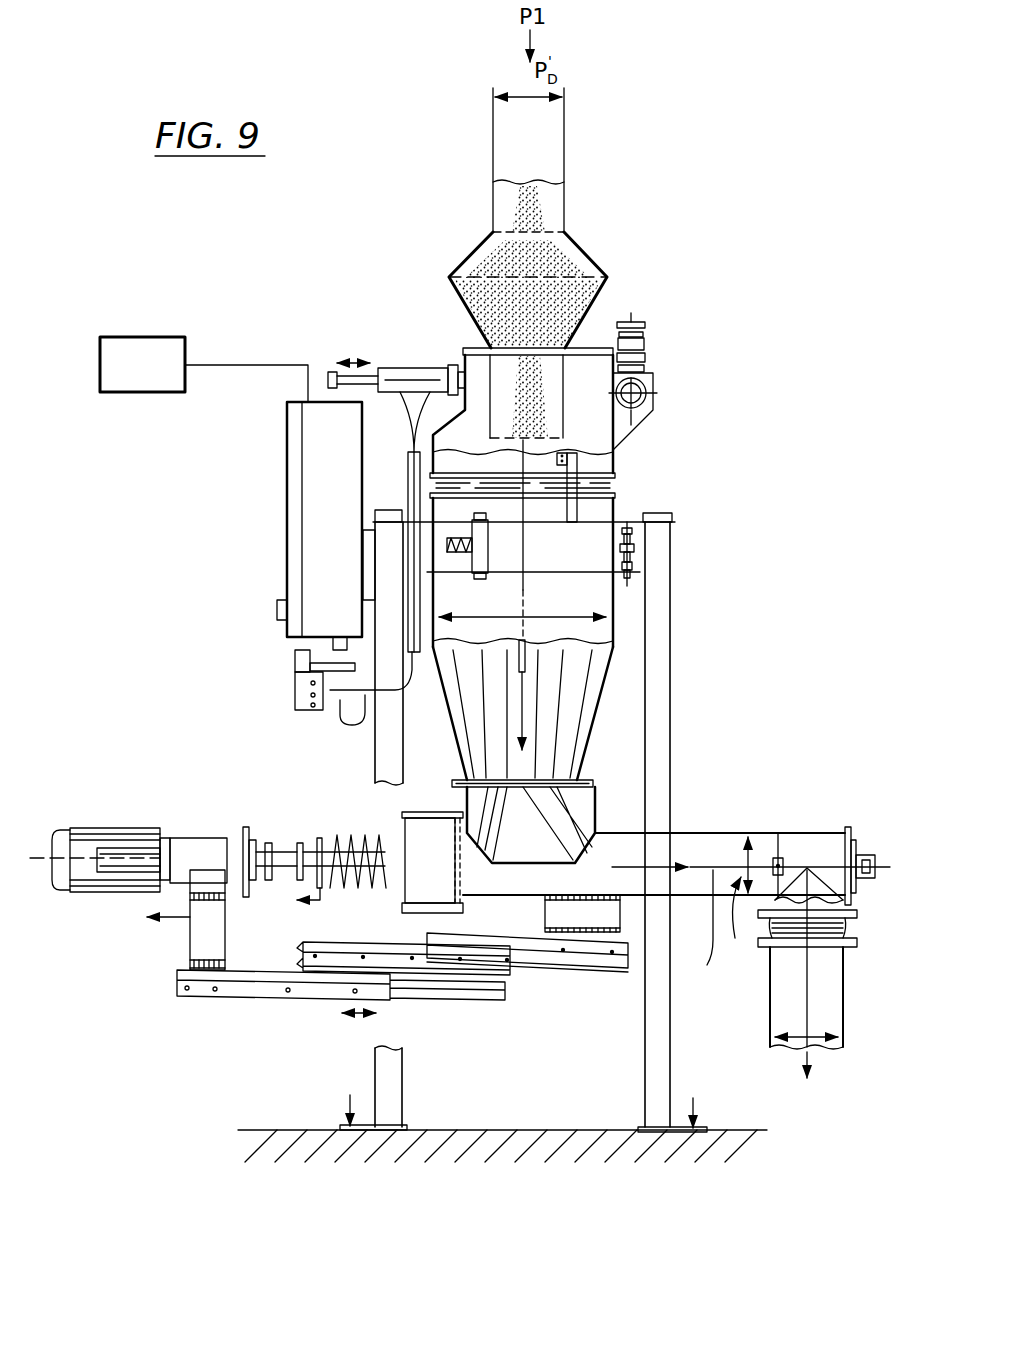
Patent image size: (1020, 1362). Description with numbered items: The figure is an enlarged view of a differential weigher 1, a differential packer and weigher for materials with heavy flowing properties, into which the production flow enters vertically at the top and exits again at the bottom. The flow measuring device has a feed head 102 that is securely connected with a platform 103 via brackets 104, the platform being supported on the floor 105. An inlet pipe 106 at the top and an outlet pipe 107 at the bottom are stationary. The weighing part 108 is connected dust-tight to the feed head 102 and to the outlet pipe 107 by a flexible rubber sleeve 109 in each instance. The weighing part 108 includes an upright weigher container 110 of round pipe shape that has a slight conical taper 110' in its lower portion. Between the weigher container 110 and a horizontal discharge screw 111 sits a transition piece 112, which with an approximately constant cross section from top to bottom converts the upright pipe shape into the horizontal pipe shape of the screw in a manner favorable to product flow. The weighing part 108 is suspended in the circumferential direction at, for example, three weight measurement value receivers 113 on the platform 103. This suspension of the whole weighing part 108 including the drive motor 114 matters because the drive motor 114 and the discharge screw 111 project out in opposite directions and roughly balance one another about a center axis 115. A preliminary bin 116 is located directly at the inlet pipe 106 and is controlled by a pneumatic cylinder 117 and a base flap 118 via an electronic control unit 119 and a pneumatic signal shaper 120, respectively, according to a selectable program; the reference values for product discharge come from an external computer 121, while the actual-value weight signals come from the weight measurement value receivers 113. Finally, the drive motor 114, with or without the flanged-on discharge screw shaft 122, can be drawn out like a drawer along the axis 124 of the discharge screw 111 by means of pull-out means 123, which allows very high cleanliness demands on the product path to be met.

The differential weigher 1 is at (207, 535).
The feed head 102 is at (404, 277).
The platform 103 is at (665, 692).
The brackets 104 is at (613, 464).
The floor 105 is at (476, 1130).
The inlet pipe 106 is at (565, 210).
The outlet pipe 107 is at (828, 992).
The weighing part 108 is at (712, 605).
The flexible rubber sleeve 109 is at (620, 487).
The weigher container 110 is at (581, 550).
The conical taper 110' is at (585, 713).
The discharge screw 111 is at (752, 848).
The transition piece 112 is at (572, 820).
The weight measurement value receiver 113 is at (640, 562).
The drive motor 114 is at (95, 827).
The center axis 115 is at (523, 693).
The preliminary bin 116 is at (575, 283).
The pneumatic cylinder 117 is at (432, 372).
The base flap 118 is at (628, 365).
The electronic control unit 119 is at (302, 460).
The pneumatic signal shaper 120 is at (295, 685).
The external computer 121 is at (135, 337).
The discharge screw shaft 122 is at (347, 835).
The pull-out means 123 is at (307, 990).
The axis of the discharge screw 124 is at (722, 930).